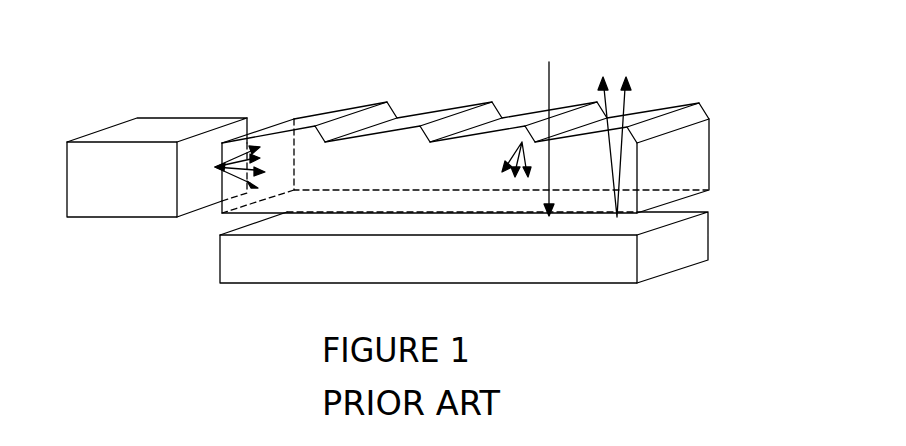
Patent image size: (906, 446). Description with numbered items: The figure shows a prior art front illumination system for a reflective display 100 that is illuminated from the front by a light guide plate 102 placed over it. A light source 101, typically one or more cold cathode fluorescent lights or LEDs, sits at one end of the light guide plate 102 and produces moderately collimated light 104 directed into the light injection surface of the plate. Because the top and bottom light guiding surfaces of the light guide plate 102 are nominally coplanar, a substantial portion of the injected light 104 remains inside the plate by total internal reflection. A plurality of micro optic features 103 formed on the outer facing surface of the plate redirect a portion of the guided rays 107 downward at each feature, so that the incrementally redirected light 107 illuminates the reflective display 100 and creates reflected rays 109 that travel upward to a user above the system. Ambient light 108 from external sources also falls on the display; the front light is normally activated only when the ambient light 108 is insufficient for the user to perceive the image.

The reflective display 100 is at (693, 243).
The light source 101 is at (127, 130).
The light guide plate 102 is at (694, 162).
The micro optic features 103 is at (457, 120).
The moderately collimated light 104 is at (240, 150).
The redirected guided rays 107 is at (512, 140).
The ambient light 108 is at (553, 97).
The reflected rays 109 is at (630, 112).